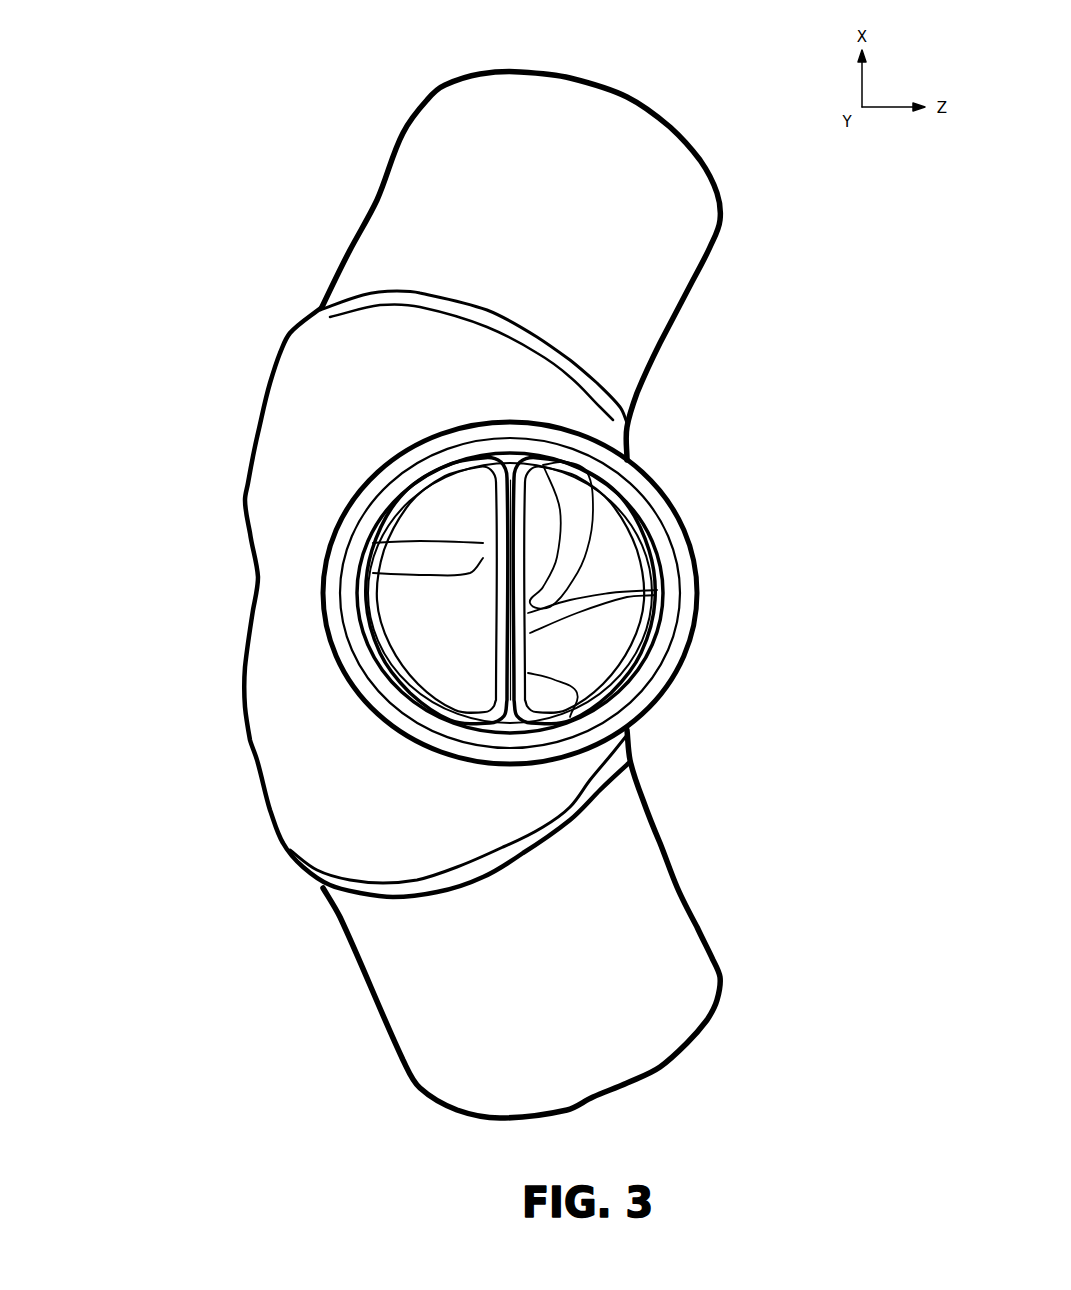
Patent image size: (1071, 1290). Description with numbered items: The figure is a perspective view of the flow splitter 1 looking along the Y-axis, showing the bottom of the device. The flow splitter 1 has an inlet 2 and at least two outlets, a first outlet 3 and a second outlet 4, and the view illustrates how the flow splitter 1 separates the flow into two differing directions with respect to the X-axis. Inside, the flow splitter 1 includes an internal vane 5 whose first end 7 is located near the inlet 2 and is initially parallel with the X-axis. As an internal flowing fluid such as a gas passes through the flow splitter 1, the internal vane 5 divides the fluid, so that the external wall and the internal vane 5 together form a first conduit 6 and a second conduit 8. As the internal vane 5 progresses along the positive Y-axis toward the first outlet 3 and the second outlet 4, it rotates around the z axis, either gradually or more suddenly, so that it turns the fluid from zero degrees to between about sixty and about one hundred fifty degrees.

The flow splitter 1 is at (210, 110).
The inlet 2 is at (700, 582).
The first outlet 3 is at (647, 102).
The second outlet 4 is at (685, 1050).
The internal vane 5 is at (490, 532).
The first conduit 6 is at (618, 552).
The first end 7 is at (500, 590).
The second conduit 8 is at (447, 655).